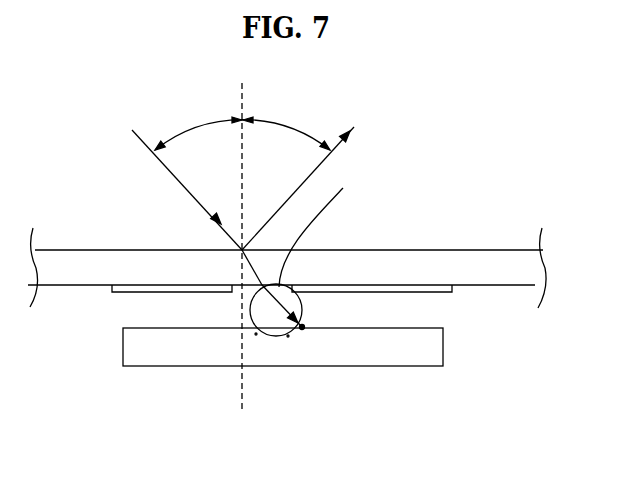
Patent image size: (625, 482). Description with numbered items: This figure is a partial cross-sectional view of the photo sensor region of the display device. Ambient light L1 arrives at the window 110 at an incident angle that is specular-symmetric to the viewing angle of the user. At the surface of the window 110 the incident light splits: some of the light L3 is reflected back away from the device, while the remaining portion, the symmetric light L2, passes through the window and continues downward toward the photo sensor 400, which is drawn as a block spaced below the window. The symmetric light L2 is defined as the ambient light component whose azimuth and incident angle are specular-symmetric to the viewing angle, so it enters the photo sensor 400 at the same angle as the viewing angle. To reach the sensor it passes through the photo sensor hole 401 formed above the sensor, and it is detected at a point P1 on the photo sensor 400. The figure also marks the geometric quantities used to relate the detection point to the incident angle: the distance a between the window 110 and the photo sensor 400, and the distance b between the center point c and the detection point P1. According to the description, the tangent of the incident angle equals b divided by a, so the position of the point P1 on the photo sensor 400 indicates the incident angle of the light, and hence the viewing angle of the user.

The window 110 is at (478, 267).
The photo sensor hole 401 is at (329, 227).
The photo sensor 400 is at (157, 348).
The ambient light L1 is at (168, 174).
The symmetric light L2 is at (303, 306).
The reflected light L3 is at (312, 175).
The distance between the window and the photo sensor a is at (250, 306).
The distance between the center point and the detection point b is at (288, 337).
The center point c is at (256, 334).
The point of light detection P1 is at (303, 329).